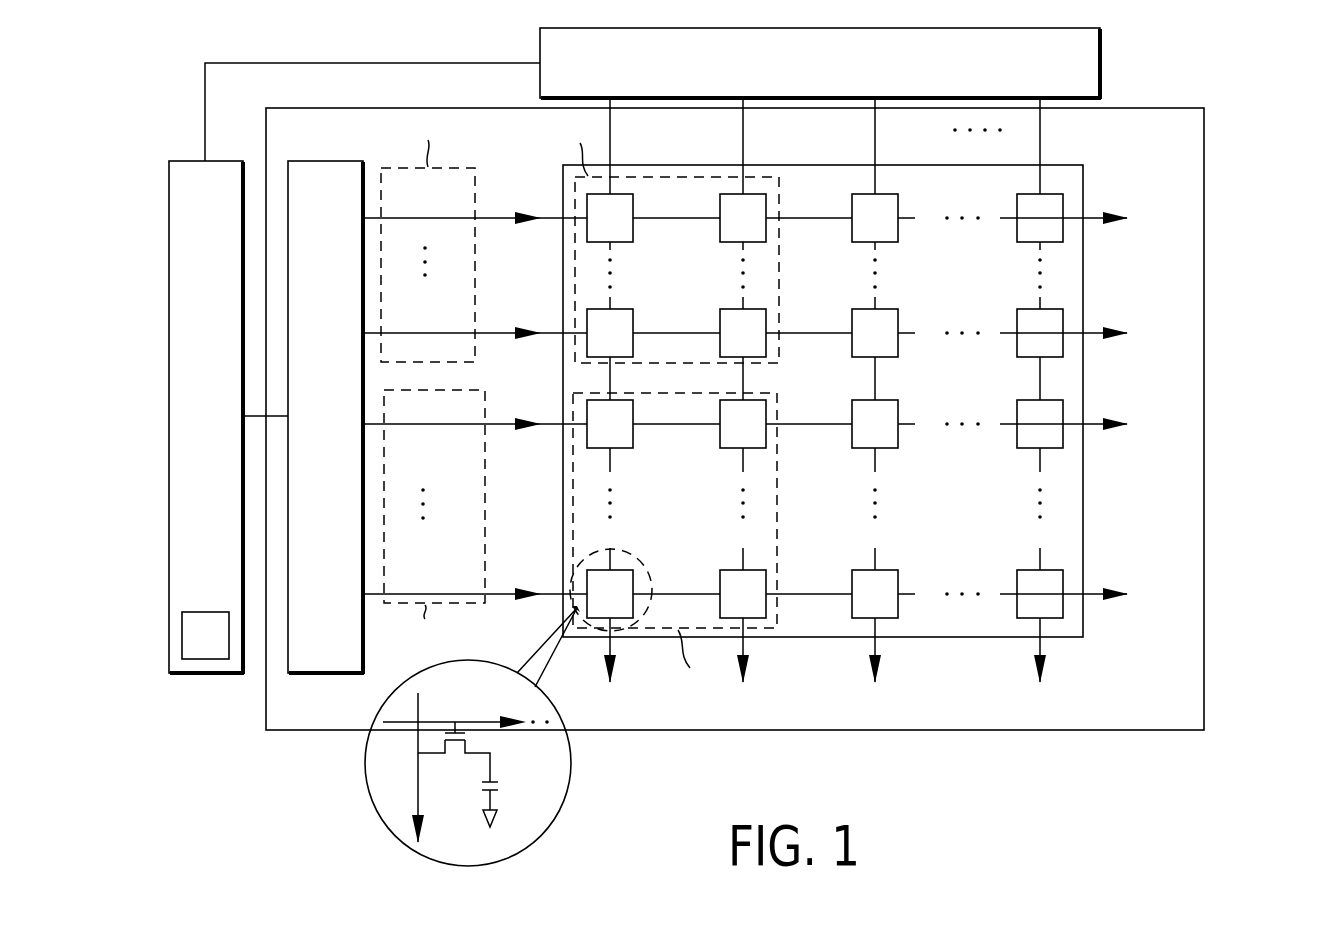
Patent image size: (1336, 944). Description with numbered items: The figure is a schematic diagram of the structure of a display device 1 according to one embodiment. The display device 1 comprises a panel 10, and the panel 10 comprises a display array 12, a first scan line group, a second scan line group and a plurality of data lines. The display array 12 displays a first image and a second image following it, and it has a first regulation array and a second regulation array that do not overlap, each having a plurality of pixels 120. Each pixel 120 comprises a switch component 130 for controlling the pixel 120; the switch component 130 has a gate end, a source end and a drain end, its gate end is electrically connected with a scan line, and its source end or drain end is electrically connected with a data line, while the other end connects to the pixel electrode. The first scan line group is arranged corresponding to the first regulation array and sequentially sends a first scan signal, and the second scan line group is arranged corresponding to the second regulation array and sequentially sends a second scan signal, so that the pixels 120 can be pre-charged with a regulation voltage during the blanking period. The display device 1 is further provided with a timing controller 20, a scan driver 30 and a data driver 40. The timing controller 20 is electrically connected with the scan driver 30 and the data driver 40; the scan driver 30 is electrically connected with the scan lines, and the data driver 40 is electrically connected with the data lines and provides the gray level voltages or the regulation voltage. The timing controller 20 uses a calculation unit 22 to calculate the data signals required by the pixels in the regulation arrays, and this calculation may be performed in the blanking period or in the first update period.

The display device 1 is at (215, 778).
The panel 10 is at (1204, 652).
The display array 12 is at (1083, 190).
The timing controller 20 is at (354, 368).
The calculation unit 22 is at (182, 636).
The scan driver 30 is at (326, 417).
The data driver 40 is at (820, 63).
The pixel 120 is at (455, 780).
The switch component 130 is at (468, 742).